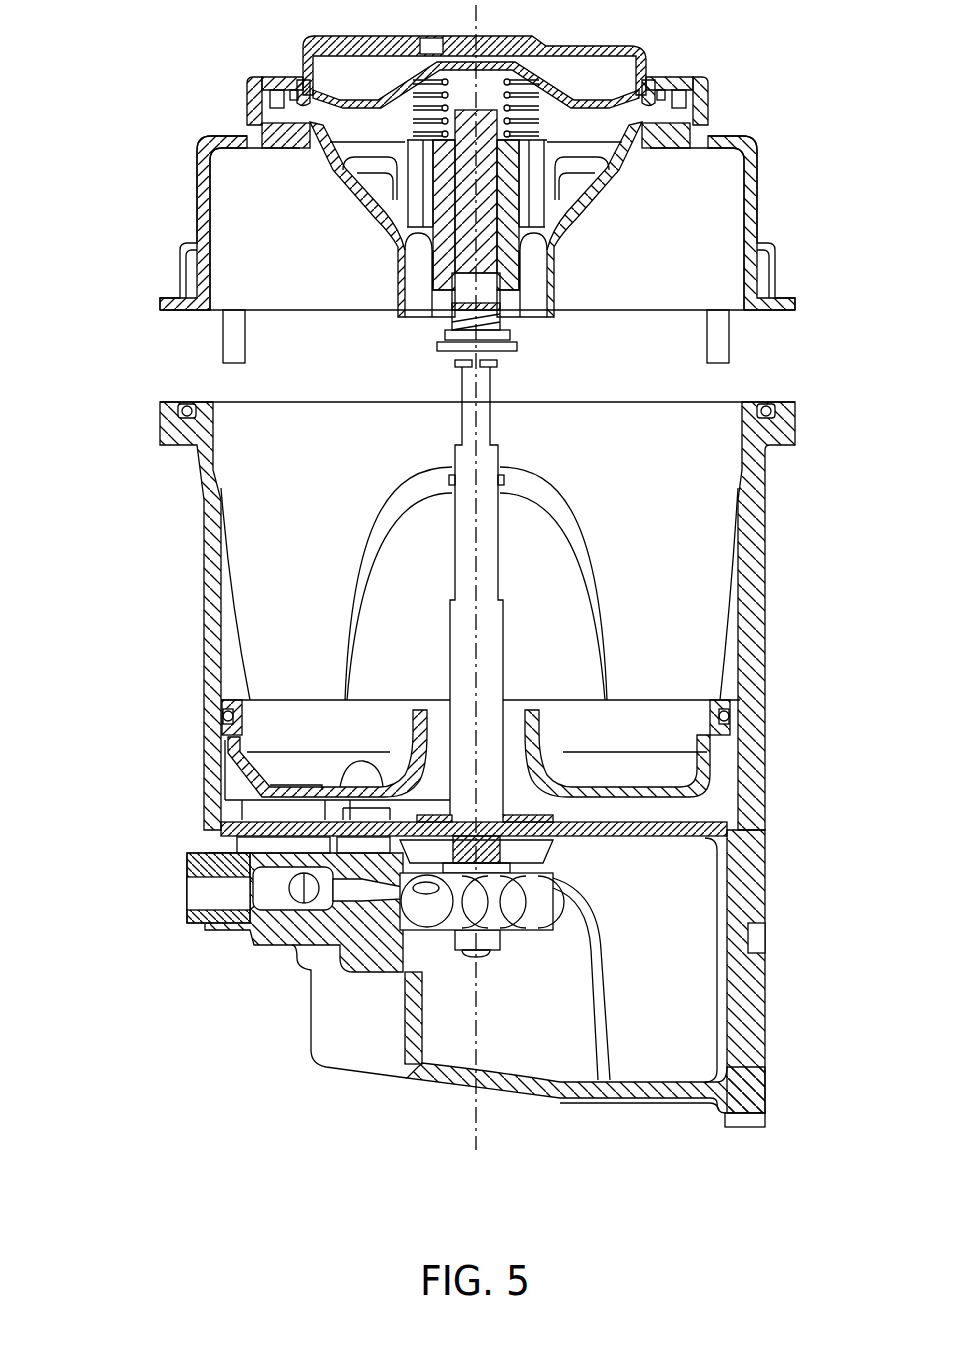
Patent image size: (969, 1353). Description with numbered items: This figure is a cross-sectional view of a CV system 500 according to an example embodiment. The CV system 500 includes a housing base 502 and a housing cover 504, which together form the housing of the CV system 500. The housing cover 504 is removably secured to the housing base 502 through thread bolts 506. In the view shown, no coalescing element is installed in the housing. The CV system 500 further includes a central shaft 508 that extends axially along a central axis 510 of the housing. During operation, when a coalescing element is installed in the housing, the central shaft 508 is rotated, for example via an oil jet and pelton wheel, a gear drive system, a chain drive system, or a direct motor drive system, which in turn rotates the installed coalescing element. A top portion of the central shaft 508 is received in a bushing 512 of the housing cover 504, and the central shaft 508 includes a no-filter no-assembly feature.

The CV system 500 is at (152, 72).
The housing base 502 is at (758, 626).
The housing cover 504 is at (747, 148).
The thread bolts 506 is at (232, 344).
The central shaft 508 is at (488, 583).
The central axis 510 is at (477, 1118).
The bushing 512 is at (440, 338).